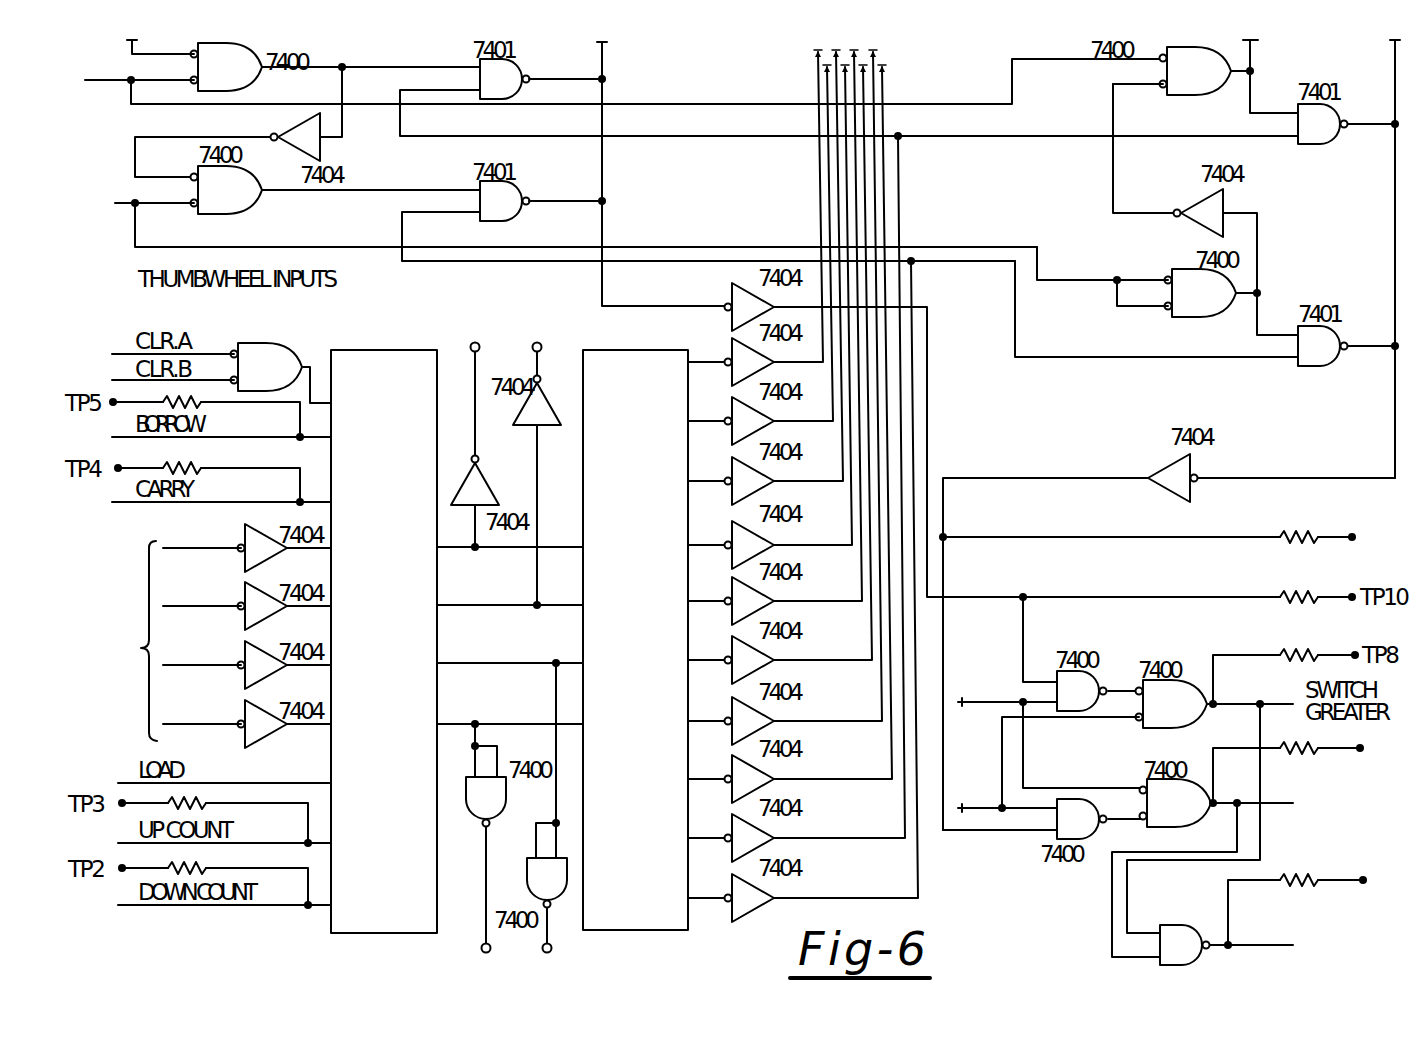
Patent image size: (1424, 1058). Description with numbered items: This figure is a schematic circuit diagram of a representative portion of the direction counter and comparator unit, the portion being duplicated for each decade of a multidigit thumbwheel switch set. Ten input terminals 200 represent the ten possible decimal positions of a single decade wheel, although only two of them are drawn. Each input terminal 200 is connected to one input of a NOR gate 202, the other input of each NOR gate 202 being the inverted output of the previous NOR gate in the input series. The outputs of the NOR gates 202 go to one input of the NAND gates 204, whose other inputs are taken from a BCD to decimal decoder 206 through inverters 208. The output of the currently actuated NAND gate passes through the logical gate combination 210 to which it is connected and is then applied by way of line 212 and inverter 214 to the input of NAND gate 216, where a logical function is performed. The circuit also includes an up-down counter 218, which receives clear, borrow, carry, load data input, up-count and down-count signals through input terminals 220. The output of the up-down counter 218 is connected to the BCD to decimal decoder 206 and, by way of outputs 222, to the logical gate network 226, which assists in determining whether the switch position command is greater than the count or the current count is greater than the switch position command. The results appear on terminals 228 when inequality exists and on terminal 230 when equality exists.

The input terminals 200 is at (97, 176).
The NOR gate 202 is at (185, 93).
The NAND gates 204 is at (578, 67).
The BCD to decimal decoder 206 is at (586, 350).
The inverters 208 is at (752, 230).
The logical gate combination 210 is at (1280, 66).
The line 212 is at (1395, 200).
The inverter 214 is at (1192, 462).
The NAND gate 216 is at (1057, 822).
The up-down counter 218 is at (380, 350).
The input terminals 220 is at (126, 592).
The outputs 222 is at (536, 345).
The logical gate network 226 is at (1327, 518).
The terminals 228 is at (1355, 777).
The terminal 230 is at (1290, 912).